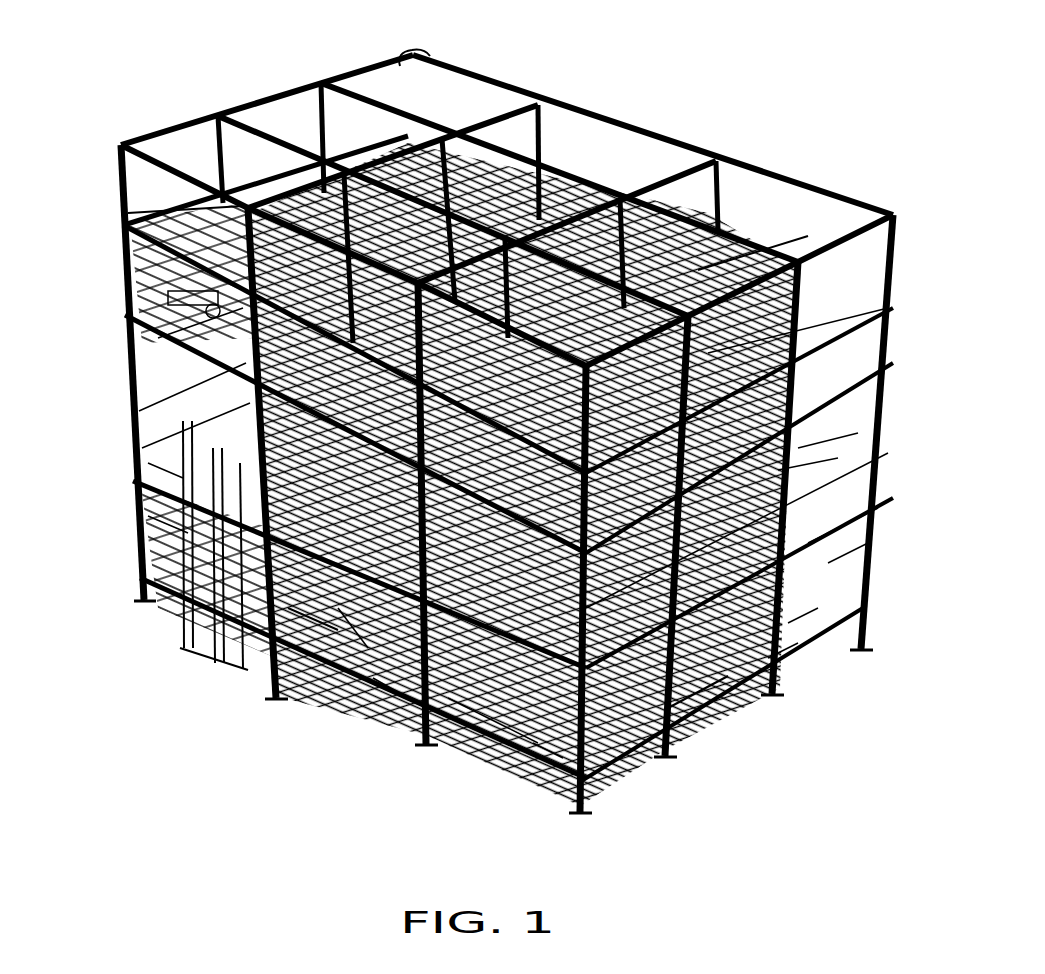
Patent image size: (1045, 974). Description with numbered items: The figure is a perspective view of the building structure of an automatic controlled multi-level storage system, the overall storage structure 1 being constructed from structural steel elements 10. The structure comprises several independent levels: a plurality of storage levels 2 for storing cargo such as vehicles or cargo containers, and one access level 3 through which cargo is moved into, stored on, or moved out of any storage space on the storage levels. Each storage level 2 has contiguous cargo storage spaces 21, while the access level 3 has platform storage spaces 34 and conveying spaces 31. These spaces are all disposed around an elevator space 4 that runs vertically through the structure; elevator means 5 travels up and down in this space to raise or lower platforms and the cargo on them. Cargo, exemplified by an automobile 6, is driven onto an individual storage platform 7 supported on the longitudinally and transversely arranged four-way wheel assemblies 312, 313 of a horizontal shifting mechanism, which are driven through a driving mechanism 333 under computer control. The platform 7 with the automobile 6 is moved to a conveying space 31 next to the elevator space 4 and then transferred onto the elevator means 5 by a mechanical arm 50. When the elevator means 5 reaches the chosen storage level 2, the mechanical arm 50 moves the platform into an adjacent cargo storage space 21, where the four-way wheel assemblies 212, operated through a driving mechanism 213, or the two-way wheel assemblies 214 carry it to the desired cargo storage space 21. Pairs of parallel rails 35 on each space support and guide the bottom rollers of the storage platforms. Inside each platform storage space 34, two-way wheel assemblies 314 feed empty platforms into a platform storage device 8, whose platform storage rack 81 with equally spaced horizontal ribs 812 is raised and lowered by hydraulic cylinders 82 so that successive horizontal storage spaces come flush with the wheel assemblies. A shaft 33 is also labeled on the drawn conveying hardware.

The storage rack frame 1 is at (838, 180).
The structural steel elements 10 is at (402, 47).
The storage level 2 is at (860, 283).
The cargo storage space 21 is at (605, 187).
The four-way wheel assembly 212 is at (550, 180).
The driving mechanism 213 is at (445, 130).
The two-way wheel assembly 214 is at (130, 205).
The access level 3 is at (860, 520).
The conveying space 31 is at (700, 670).
The four-way wheel assembly 312 is at (488, 717).
The four-way wheel assembly 313 is at (840, 540).
The two-way wheel assembly 314 is at (150, 507).
The drive shaft 33 is at (795, 612).
The driving mechanism 333 is at (515, 740).
The platform storage space 34 is at (153, 453).
The parallel rails 35 is at (720, 240).
The elevator space 4 is at (480, 140).
The elevator means 5 is at (348, 625).
The mechanical arm 50 is at (380, 690).
The automobile 6 is at (173, 288).
The storage platform 7 is at (170, 326).
The platform storage device 8 is at (150, 547).
The platform storage rack 81 is at (145, 578).
The hydraulic cylinder 82 is at (170, 600).
The horizontal ribs 812 is at (203, 640).